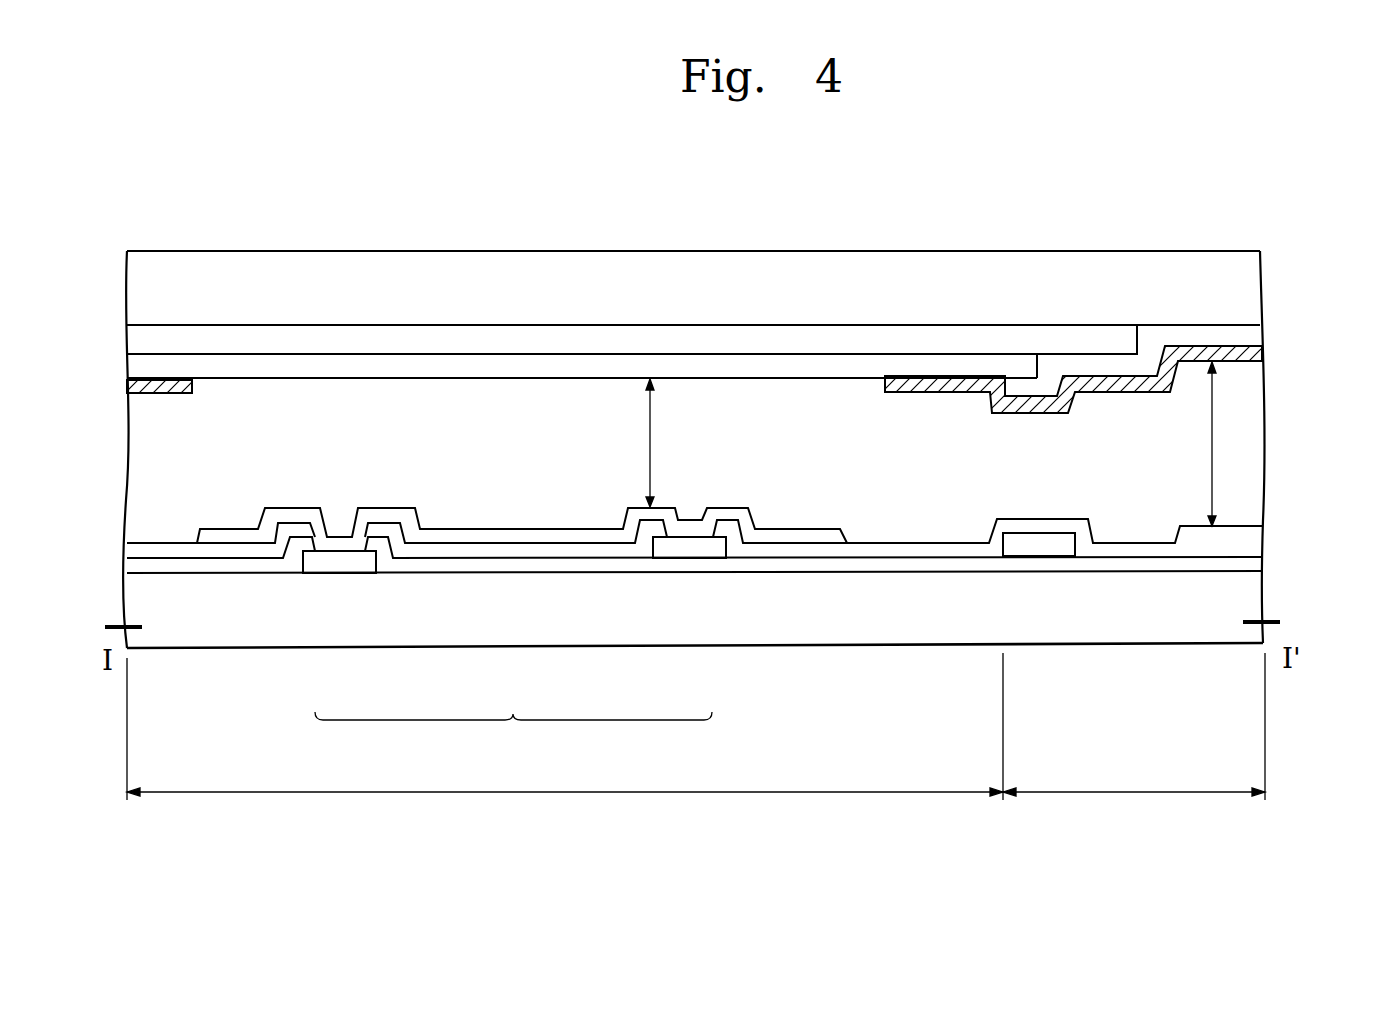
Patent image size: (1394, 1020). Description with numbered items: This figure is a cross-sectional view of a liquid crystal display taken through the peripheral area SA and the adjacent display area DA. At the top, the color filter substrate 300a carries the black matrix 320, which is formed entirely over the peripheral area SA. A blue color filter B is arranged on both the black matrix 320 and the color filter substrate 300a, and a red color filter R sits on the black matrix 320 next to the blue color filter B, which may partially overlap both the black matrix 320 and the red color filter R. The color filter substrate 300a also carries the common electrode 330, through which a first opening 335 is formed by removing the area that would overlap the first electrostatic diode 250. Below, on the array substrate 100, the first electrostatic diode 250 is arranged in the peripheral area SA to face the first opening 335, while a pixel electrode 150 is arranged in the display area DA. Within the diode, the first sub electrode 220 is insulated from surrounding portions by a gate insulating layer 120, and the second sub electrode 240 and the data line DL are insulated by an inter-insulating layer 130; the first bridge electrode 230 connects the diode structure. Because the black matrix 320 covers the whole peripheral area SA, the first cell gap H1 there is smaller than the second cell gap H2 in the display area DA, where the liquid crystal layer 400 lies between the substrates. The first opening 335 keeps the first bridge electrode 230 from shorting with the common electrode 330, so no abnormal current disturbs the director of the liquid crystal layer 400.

The array substrate 100 is at (1253, 605).
The gate insulating layer 120 is at (1253, 575).
The inter-insulating layer 130 is at (1253, 547).
The pixel electrode 150 is at (1253, 515).
The first sub electrode 220 is at (338, 567).
The first bridge electrode 230 is at (488, 543).
The second sub electrode 240 is at (690, 548).
The first electrostatic diode 250 is at (513, 735).
The color filter substrate 300a is at (1255, 292).
The black matrix 320 is at (647, 337).
The common electrode 330 is at (130, 388).
The first opening 335 is at (467, 399).
The liquid crystal layer 400 is at (1255, 433).
The red color filter R is at (945, 355).
The blue color filter B is at (1165, 340).
The data line DL is at (1040, 548).
The peripheral area SA is at (565, 726).
The display area DA is at (1134, 726).
The first cell gap H1 is at (636, 443).
The second cell gap H2 is at (1197, 444).